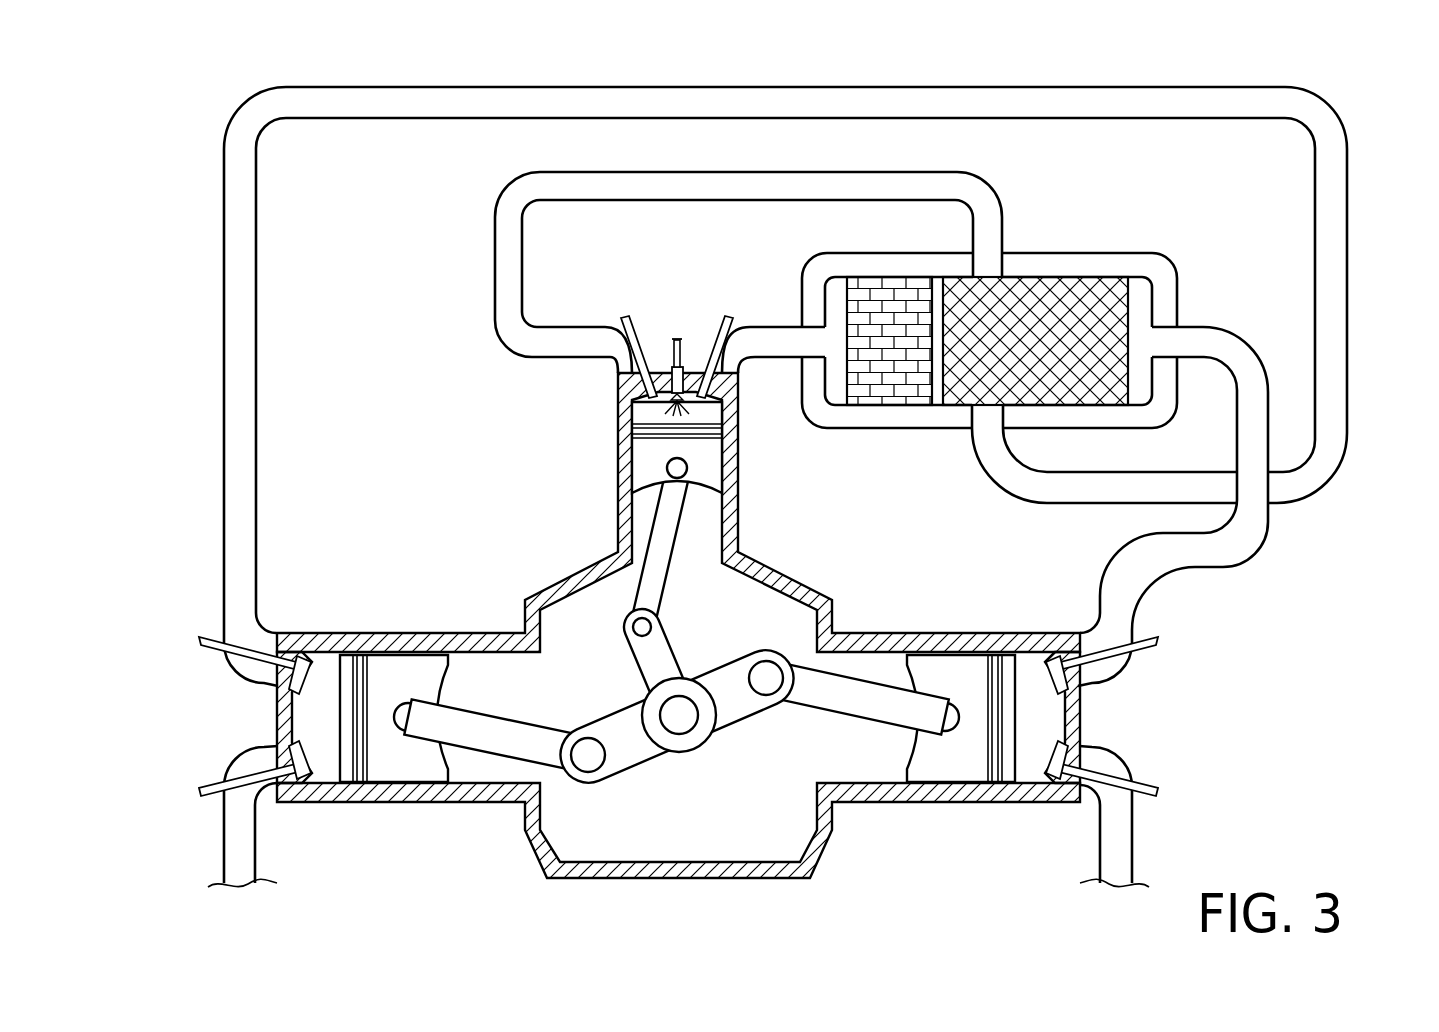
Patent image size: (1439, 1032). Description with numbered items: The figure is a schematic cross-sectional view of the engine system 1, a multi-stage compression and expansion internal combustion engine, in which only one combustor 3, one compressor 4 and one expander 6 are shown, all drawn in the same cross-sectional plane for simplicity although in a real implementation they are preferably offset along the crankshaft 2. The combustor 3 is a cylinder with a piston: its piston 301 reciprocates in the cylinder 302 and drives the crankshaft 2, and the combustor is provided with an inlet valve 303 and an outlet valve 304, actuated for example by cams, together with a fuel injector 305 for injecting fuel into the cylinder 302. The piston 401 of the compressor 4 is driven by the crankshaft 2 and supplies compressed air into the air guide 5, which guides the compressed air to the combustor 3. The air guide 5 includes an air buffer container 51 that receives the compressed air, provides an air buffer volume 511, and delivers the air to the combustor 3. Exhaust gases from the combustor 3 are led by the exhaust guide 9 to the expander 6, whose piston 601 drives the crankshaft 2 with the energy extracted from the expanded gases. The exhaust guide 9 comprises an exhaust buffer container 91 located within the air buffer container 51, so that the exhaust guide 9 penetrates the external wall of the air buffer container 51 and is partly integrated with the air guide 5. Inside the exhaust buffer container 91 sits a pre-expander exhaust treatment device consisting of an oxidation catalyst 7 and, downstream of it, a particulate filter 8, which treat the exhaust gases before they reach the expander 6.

The engine system 1 is at (120, 191).
The crankshaft 2 is at (668, 732).
The combustor 3 is at (629, 253).
The piston 301 is at (650, 453).
The cylinder 302 is at (632, 521).
The inlet valve 303 is at (630, 350).
The outlet valve 304 is at (688, 357).
The fuel injector 305 is at (660, 353).
The piston compressor 4 is at (639, 777).
The piston of compressor 401 is at (393, 757).
The air guide 5 is at (587, 172).
The air buffer container 51 is at (1078, 253).
The air buffer volume 511 is at (803, 273).
The piston expander 6 is at (1013, 777).
The piston of expander 601 is at (956, 757).
The oxidation catalyst 7 is at (893, 293).
The particulate filter 8 is at (1024, 285).
The exhaust guide 9 is at (1268, 417).
The exhaust buffer container 91 is at (1113, 277).